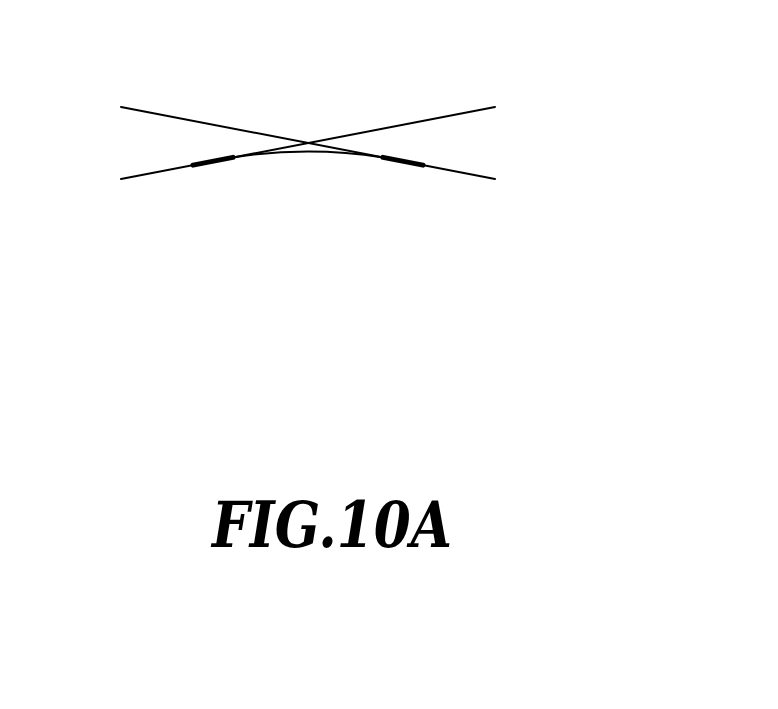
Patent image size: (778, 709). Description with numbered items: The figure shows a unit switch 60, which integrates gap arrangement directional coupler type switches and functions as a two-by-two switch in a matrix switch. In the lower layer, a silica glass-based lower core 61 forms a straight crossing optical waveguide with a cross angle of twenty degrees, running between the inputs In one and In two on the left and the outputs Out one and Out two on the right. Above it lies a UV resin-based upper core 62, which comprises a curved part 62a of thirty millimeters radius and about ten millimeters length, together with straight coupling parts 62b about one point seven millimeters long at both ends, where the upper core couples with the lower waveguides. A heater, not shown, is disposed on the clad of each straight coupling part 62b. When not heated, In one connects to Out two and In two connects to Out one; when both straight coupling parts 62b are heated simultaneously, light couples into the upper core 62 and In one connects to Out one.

The unit switch 60 is at (583, 182).
The silica glass-based lower core 61 is at (210, 124).
The upper core 62 is at (306, 263).
The curved part 62a is at (308, 234).
The straight coupling part 62b is at (220, 162).